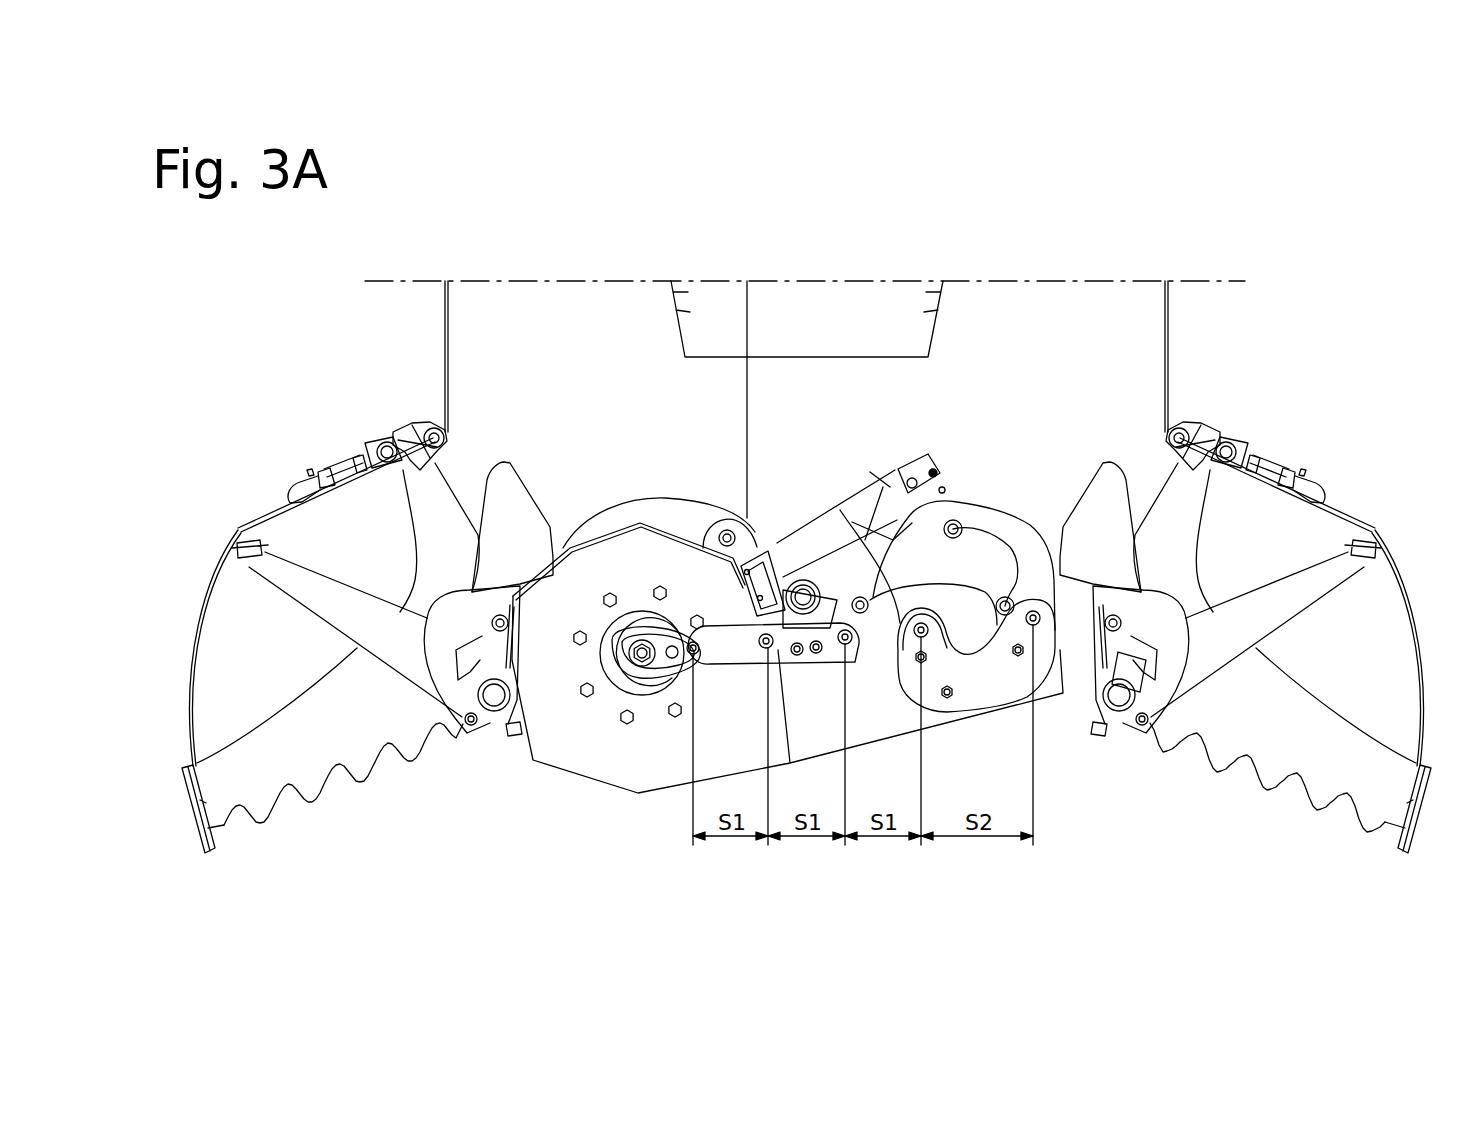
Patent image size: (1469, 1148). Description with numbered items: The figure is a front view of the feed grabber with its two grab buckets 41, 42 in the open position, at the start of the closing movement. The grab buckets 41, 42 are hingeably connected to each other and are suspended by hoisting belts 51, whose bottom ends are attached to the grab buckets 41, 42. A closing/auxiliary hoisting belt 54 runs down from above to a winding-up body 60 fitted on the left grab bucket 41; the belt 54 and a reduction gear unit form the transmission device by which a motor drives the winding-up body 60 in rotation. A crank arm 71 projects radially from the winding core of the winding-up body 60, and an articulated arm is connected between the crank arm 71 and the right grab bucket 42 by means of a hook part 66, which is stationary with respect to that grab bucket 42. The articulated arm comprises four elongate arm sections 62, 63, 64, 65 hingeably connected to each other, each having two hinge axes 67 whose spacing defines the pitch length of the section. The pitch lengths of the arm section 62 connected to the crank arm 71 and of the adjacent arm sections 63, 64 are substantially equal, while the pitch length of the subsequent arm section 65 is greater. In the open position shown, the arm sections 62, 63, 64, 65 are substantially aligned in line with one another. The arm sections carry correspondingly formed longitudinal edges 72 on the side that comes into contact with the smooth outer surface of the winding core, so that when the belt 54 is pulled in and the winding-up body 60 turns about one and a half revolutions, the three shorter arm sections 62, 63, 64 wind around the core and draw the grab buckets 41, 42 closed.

The grab bucket 41 is at (276, 684).
The grab bucket 42 is at (1273, 562).
The hoisting belts 51 is at (445, 330).
The closing/auxiliary hoisting belt 54 is at (748, 383).
The winding-up body 60 is at (637, 640).
The arm section 62 is at (738, 655).
The arm section 63 is at (815, 660).
The arm section 64 is at (878, 628).
The arm section 65 is at (978, 672).
The hook part 66 is at (1023, 533).
The hinge axes 67 is at (694, 654).
The crank arm 71 is at (672, 640).
The longitudinal edges 72 is at (730, 660).